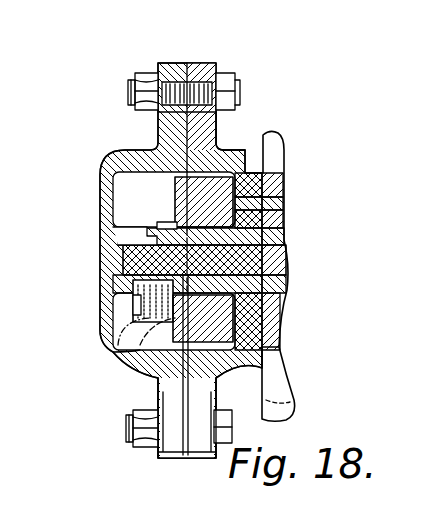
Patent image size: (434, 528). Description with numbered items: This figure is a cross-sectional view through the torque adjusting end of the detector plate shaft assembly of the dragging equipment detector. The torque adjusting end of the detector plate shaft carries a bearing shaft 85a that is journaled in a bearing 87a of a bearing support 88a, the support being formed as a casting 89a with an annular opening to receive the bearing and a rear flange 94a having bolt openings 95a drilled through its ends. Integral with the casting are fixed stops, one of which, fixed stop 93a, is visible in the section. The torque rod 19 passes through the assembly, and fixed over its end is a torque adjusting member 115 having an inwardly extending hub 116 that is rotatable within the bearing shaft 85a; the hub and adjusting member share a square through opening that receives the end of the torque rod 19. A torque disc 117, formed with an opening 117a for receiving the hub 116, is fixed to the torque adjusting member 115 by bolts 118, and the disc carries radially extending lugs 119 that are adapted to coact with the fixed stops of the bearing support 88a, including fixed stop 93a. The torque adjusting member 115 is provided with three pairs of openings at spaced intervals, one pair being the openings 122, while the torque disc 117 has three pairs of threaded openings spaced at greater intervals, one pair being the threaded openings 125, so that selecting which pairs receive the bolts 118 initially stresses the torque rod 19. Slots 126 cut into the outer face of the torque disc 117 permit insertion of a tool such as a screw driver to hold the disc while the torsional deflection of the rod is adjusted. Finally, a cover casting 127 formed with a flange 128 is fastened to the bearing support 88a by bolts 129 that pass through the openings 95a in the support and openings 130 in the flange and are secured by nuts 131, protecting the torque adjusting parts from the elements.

The torque rod 19 is at (284, 247).
The bearing shaft 85a is at (283, 206).
The bearing 87a is at (283, 178).
The bearing support 88a is at (274, 73).
The casting 89a is at (244, 145).
The fixed stop 93a is at (240, 345).
The flange 94a is at (193, 72).
The bolt openings 95a is at (207, 63).
The torque adjusting member 115 is at (163, 224).
The hub 116 is at (284, 233).
The torque disc 117 is at (220, 148).
The opening 117a is at (116, 241).
The bolts 118 is at (147, 313).
The radially extending lugs 119 is at (273, 135).
The openings 122 is at (120, 328).
The threaded openings 125 is at (158, 350).
The slots 126 is at (176, 187).
The cover casting 127 is at (108, 177).
The flange 128 is at (158, 73).
The bolts 129 is at (236, 82).
The openings 130 is at (181, 80).
The nuts 131 is at (148, 110).